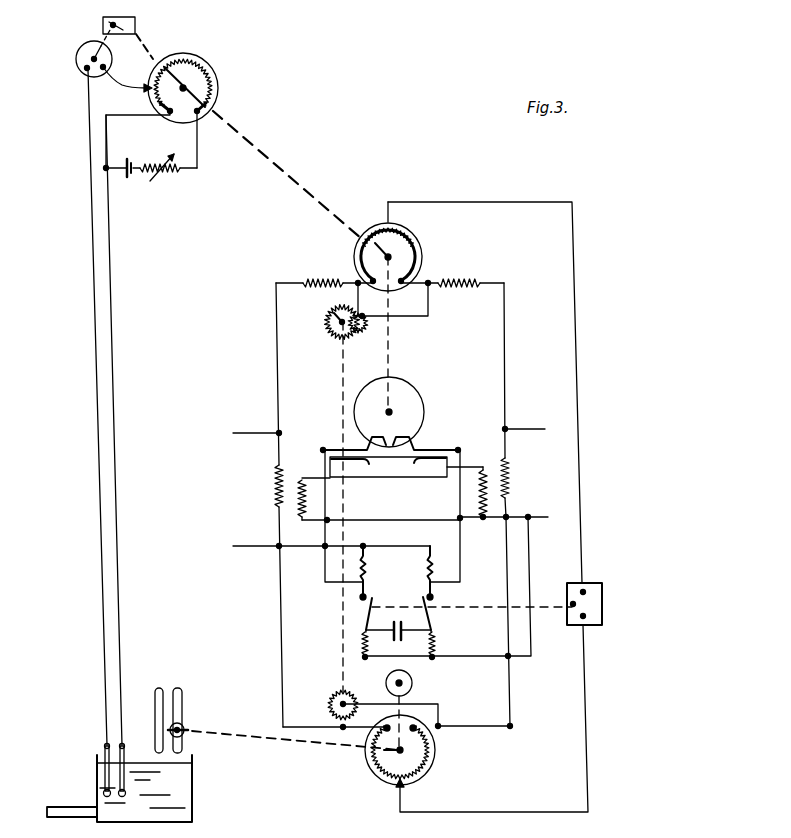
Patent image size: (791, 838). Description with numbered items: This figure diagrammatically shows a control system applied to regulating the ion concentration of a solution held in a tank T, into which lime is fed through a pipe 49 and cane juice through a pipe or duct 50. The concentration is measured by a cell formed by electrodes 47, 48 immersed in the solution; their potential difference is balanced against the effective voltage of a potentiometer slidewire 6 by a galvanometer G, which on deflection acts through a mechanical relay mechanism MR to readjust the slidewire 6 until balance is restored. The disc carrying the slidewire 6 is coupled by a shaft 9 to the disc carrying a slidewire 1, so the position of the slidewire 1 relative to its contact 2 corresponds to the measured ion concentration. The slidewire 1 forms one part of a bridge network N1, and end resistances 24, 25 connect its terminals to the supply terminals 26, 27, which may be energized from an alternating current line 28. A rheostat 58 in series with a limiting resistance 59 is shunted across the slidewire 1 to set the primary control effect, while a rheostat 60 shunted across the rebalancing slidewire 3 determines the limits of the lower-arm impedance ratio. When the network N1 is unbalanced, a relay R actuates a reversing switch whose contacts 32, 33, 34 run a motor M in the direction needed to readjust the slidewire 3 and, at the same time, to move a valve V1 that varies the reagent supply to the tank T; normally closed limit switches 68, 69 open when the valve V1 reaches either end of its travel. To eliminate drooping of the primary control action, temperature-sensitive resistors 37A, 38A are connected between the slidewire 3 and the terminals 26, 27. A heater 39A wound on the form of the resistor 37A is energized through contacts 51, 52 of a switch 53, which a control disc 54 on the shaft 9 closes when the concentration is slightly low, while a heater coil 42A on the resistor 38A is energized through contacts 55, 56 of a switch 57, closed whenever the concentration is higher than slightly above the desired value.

The slidewire 1 is at (396, 233).
The contact 2 is at (388, 229).
The slidewire 3 is at (436, 757).
The potentiometer slidewire 6 is at (213, 84).
The shaft 9 is at (143, 45).
The end coil or resistance 24 is at (322, 280).
The end coil or resistance 25 is at (452, 268).
The terminal 26 is at (276, 432).
The terminal 27 is at (507, 428).
The alternating current line 28 is at (272, 546).
The contact 32 is at (358, 597).
The contact 33 is at (366, 614).
The contact 34 is at (432, 619).
The resistor 37A is at (275, 484).
The resistor 38A is at (508, 489).
The heater 39A is at (302, 507).
The heater coil 42A is at (483, 505).
The electrode 47 is at (104, 752).
The electrode 48 is at (118, 746).
The pipe 49 is at (178, 700).
The pipe or duct 50 is at (156, 705).
The contact 51 is at (418, 447).
The contact 52 is at (430, 458).
The switch 53 is at (463, 446).
The control disc 54 is at (406, 398).
The contact 55 is at (352, 461).
The contact 56 is at (370, 445).
The switch 57 is at (338, 449).
The rheostat 58 is at (326, 322).
The limiting resistance 59 is at (356, 334).
The rheostat 60 is at (331, 703).
The limit switch 68 is at (367, 564).
The limit switch 69 is at (428, 565).
The mechanical relay mechanism MR is at (128, 22).
The galvanometer G is at (76, 62).
The network N1 is at (260, 363).
The relay R is at (603, 604).
The motor M is at (413, 683).
The valve V1 is at (185, 729).
The tank T is at (185, 778).